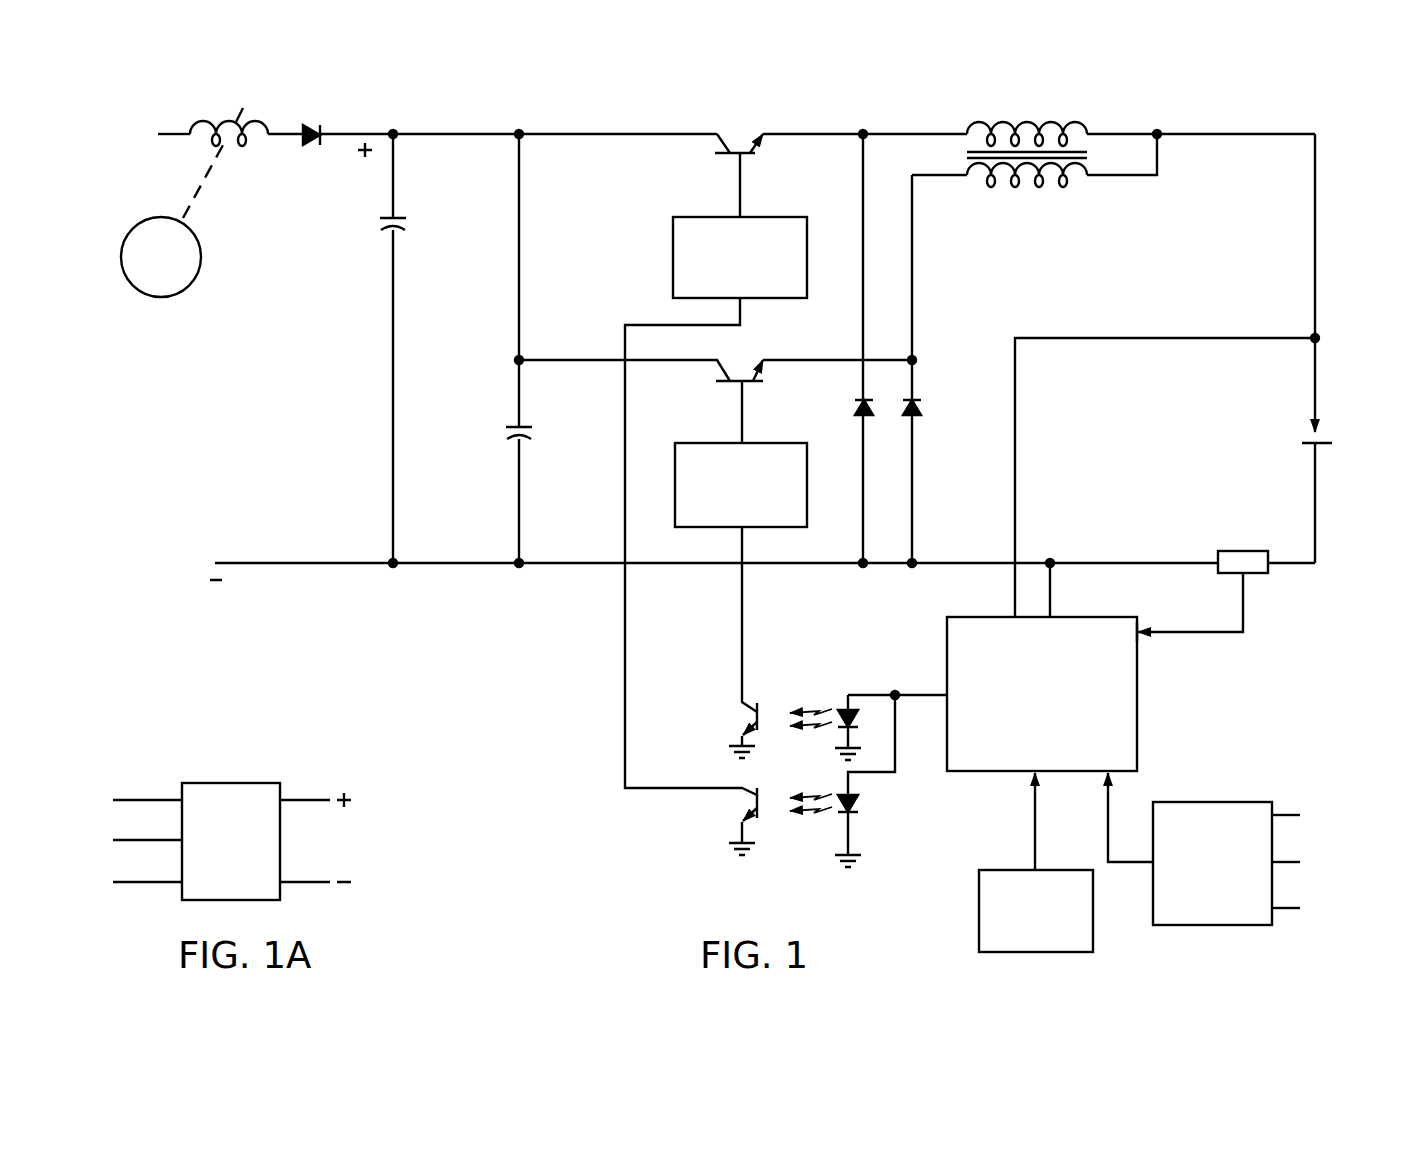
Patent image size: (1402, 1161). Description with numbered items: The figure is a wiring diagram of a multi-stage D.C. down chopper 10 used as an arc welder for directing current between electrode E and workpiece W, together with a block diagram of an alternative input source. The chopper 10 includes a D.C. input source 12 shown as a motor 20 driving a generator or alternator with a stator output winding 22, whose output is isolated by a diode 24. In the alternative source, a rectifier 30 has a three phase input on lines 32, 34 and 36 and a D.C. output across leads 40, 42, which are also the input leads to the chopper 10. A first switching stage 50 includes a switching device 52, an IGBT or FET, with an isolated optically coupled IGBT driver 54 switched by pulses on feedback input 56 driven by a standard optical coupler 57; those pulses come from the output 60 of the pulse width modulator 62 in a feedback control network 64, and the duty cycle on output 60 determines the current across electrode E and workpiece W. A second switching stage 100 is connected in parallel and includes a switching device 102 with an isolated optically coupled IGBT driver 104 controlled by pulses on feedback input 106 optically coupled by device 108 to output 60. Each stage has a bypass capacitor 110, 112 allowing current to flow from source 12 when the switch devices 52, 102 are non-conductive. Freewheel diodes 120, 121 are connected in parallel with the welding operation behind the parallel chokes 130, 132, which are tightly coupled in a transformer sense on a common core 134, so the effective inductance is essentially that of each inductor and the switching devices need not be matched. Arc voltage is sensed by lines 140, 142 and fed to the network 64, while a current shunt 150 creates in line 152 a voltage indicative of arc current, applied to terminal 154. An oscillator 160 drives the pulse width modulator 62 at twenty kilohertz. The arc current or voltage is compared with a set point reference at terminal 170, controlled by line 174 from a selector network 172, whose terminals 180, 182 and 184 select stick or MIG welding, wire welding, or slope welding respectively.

In FIG. 1, the multi-stage D.C. down chopper 10 is at (503, 621).
In FIG. 1, the D.C. input source 12 is at (270, 217).
In FIG. 1, the motor 20 is at (172, 298).
In FIG. 1, the stator output winding 22 is at (245, 147).
In FIG. 1, the diode 24 is at (308, 142).
In FIG. 1A, the rectifier 30 is at (244, 782).
In FIG. 1A, the three phase input line 32 is at (153, 799).
In FIG. 1A, the three phase input line 34 is at (140, 838).
In FIG. 1A, the three phase input line 36 is at (148, 883).
In FIG. 1, the D.C. output lead 40 is at (355, 133).
In FIG. 1A, the D.C. output lead 40 is at (304, 799).
In FIG. 1, the D.C. output lead 42 is at (257, 562).
In FIG. 1A, the D.C. output lead 42 is at (304, 881).
In FIG. 1, the first switching stage 50 is at (708, 179).
In FIG. 1, the switching device 52 is at (767, 153).
In FIG. 1, the isolated optically coupled IGBT driver 54 is at (673, 262).
In FIG. 1, the feedback input 56 is at (627, 727).
In FIG. 1, the optical coupler 57 is at (780, 815).
In FIG. 1, the pulse width modulator output 60 is at (925, 690).
In FIG. 1, the pulse width modulator 62 is at (1042, 695).
In FIG. 1, the feedback control network 64 is at (995, 772).
In FIG. 1, the second switching stage 100 is at (717, 371).
In FIG. 1, the switching device 102 is at (720, 381).
In FIG. 1, the isolated optically coupled IGBT driver 104 is at (778, 443).
In FIG. 1, the feedback input 106 is at (745, 620).
In FIG. 1, the optical coupling device 108 is at (775, 708).
In FIG. 1, the bypass capacitor 110 is at (380, 223).
In FIG. 1, the bypass capacitor 112 is at (507, 433).
In FIG. 1, the freewheel diode 120 is at (857, 418).
In FIG. 1, the freewheel diode 121 is at (920, 415).
In FIG. 1, the choke 130 is at (1034, 174).
In FIG. 1, the choke 132 is at (1050, 183).
In FIG. 1, the common core 134 is at (1002, 160).
In FIG. 1, the voltage sensing line 140 is at (1017, 497).
In FIG. 1, the voltage sensing line 142 is at (1053, 594).
In FIG. 1, the current shunt 150 is at (1235, 550).
In FIG. 1, the current feedback line 152 is at (1185, 634).
In FIG. 1, the current terminal 154 is at (1142, 626).
In FIG. 1, the oscillator 160 is at (979, 910).
In FIG. 1, the set point reference terminal 170 is at (1112, 773).
In FIG. 1, the selector network 172 is at (1232, 802).
In FIG. 1, the selector output line 174 is at (1125, 862).
In FIG. 1, the stick/MIG selection terminal 180 is at (1285, 812).
In FIG. 1, the wire welding selection terminal 182 is at (1293, 864).
In FIG. 1, the slope welding selection terminal 184 is at (1290, 910).
In FIG. 1, the electrode E is at (1320, 428).
In FIG. 1, the workpiece W is at (1300, 446).